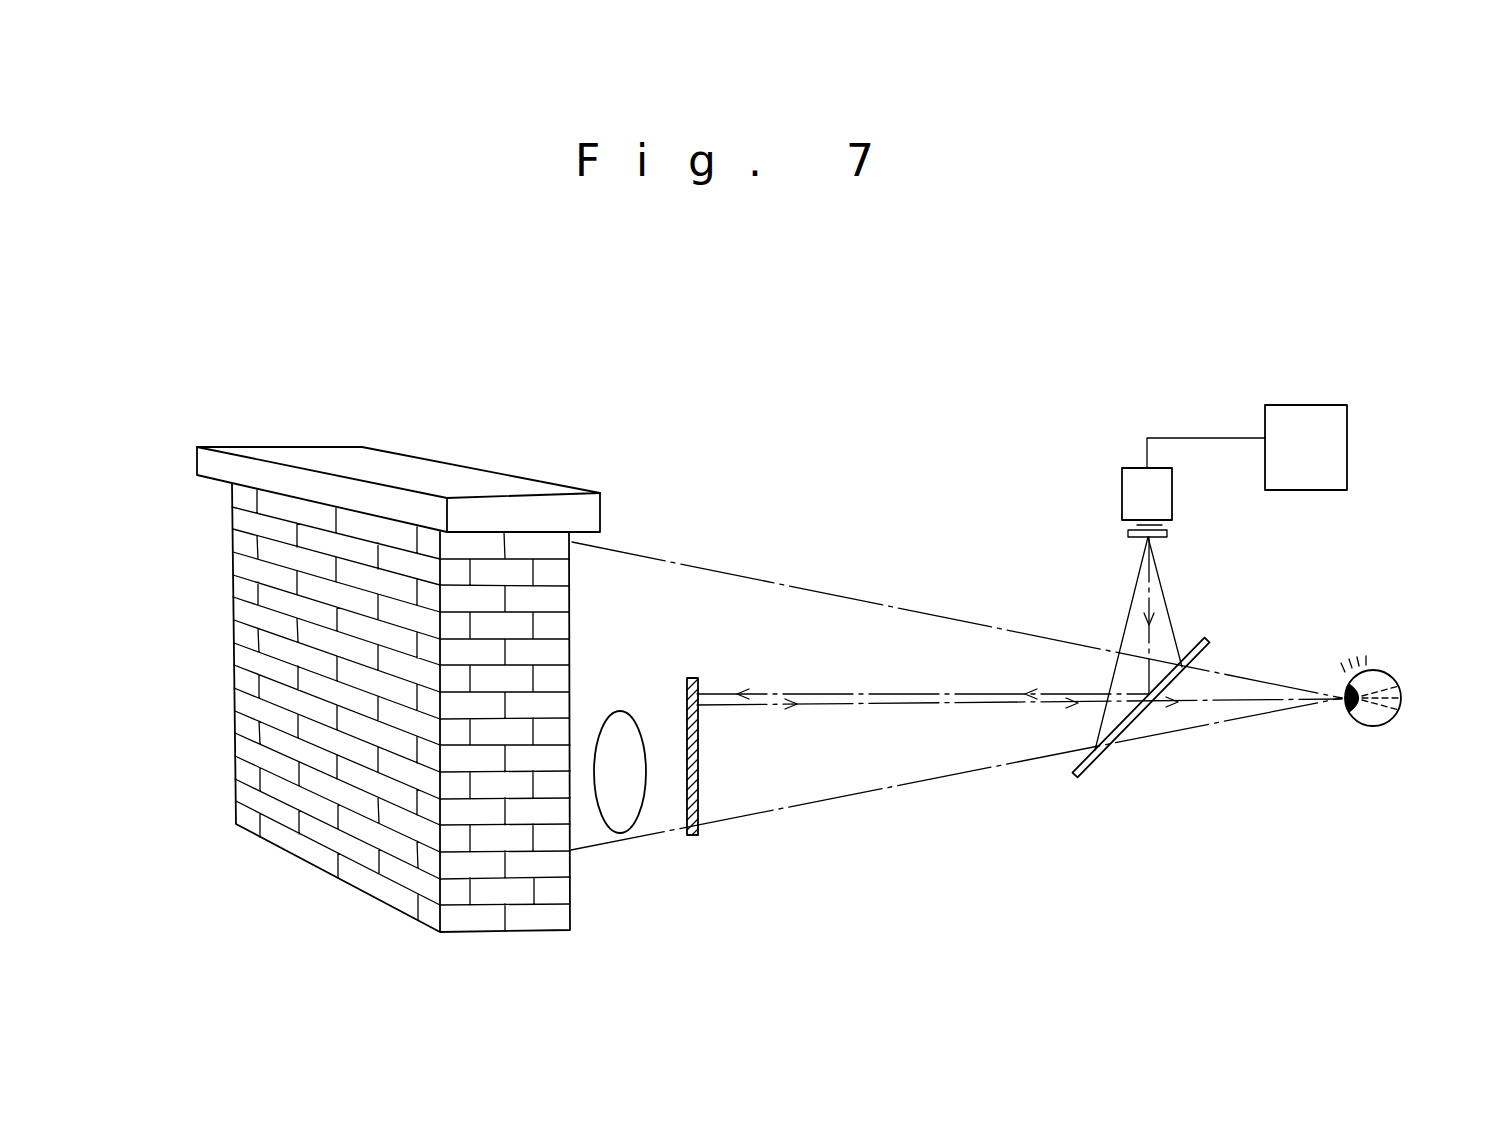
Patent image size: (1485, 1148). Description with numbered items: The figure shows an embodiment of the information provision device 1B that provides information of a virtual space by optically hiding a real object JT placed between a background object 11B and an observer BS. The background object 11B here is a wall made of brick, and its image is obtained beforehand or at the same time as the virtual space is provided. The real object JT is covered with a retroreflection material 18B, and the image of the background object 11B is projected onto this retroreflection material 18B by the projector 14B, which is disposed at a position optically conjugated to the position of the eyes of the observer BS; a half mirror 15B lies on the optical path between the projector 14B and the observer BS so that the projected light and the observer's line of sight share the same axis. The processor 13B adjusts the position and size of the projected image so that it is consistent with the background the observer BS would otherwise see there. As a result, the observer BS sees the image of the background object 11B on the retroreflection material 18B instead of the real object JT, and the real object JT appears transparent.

The information provision device 1B is at (878, 398).
The background object 11B is at (572, 484).
The real object JT is at (623, 820).
The retroreflection material 18B is at (698, 808).
The projector 14B is at (1132, 490).
The processor 13B is at (1322, 490).
The half mirror 15B is at (1193, 644).
The observer BS is at (1370, 725).